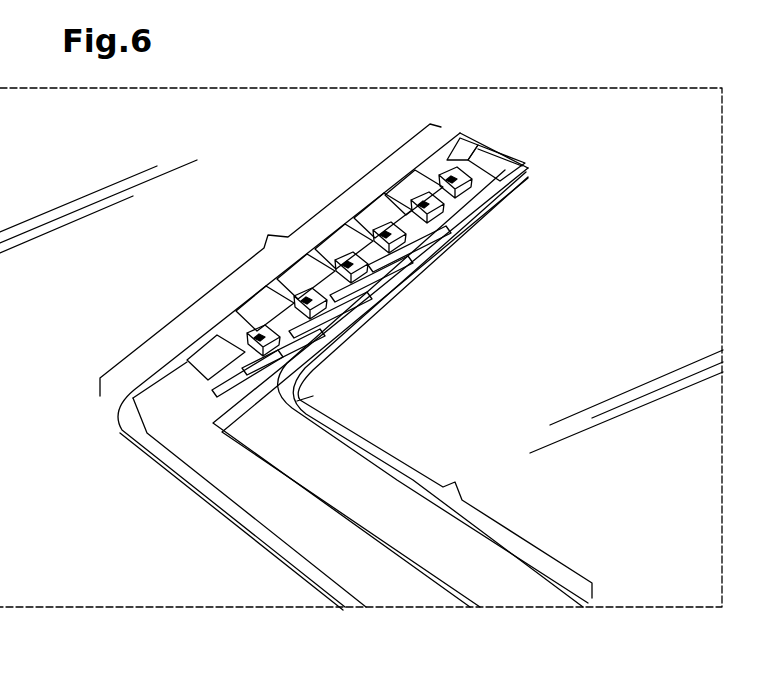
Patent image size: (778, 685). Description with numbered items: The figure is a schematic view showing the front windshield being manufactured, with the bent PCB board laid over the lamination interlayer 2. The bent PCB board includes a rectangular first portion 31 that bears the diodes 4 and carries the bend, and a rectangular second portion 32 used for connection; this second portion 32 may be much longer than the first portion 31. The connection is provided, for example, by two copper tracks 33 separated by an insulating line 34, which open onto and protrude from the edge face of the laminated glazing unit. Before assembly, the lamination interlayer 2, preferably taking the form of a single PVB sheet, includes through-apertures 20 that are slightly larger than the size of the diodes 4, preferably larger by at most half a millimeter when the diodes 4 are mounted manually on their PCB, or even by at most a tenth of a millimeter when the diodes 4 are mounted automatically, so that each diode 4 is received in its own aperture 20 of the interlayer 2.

The lamination interlayer 2 is at (101, 300).
The diodes 4 is at (368, 297).
The through-apertures 20 is at (485, 140).
The first portion 31 is at (270, 260).
The second portion 32 is at (444, 387).
The copper tracks 33 is at (258, 484).
The insulating line 34 is at (370, 532).